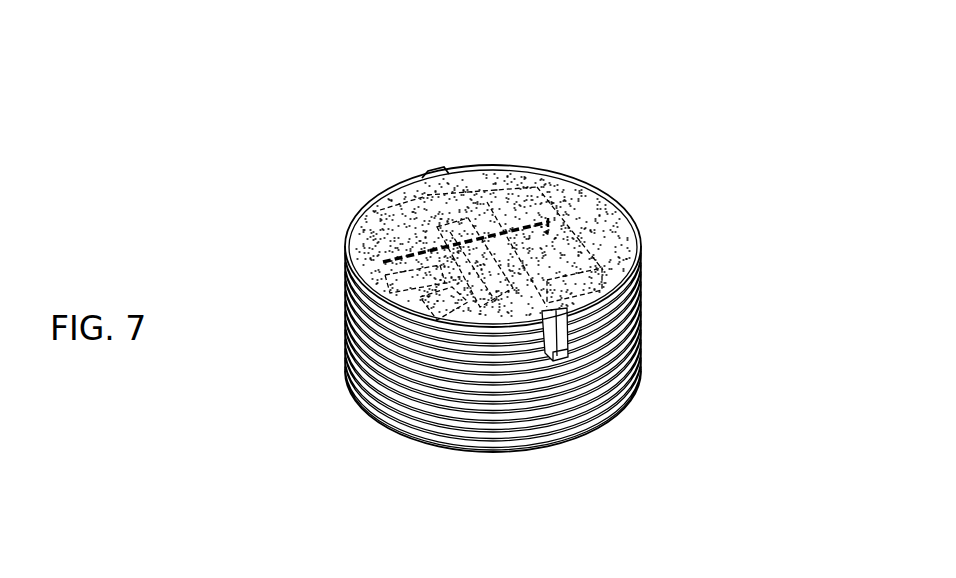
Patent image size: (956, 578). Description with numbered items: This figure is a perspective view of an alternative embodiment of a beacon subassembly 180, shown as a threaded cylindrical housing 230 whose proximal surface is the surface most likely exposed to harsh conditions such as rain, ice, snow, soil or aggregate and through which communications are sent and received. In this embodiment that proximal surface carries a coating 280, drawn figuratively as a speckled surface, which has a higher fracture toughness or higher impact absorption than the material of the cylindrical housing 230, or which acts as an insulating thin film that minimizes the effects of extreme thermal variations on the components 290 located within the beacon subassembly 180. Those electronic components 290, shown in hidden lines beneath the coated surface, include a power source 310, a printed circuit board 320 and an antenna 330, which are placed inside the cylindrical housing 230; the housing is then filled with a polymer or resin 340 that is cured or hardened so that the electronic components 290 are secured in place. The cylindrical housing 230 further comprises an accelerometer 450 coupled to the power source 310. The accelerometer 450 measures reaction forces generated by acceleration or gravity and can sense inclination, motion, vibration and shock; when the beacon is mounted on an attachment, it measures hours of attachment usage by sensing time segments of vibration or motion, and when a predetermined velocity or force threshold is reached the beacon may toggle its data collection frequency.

The beacon subassembly 180 is at (603, 58).
The cylindrical housing 230 is at (643, 326).
The coating 280 is at (620, 210).
The electronic components 290 is at (348, 259).
The power source 310 is at (347, 285).
The printed circuit board 320 is at (643, 237).
The antenna 330 is at (383, 210).
The polymer or resin 340 is at (487, 180).
The accelerometer 450 is at (413, 175).